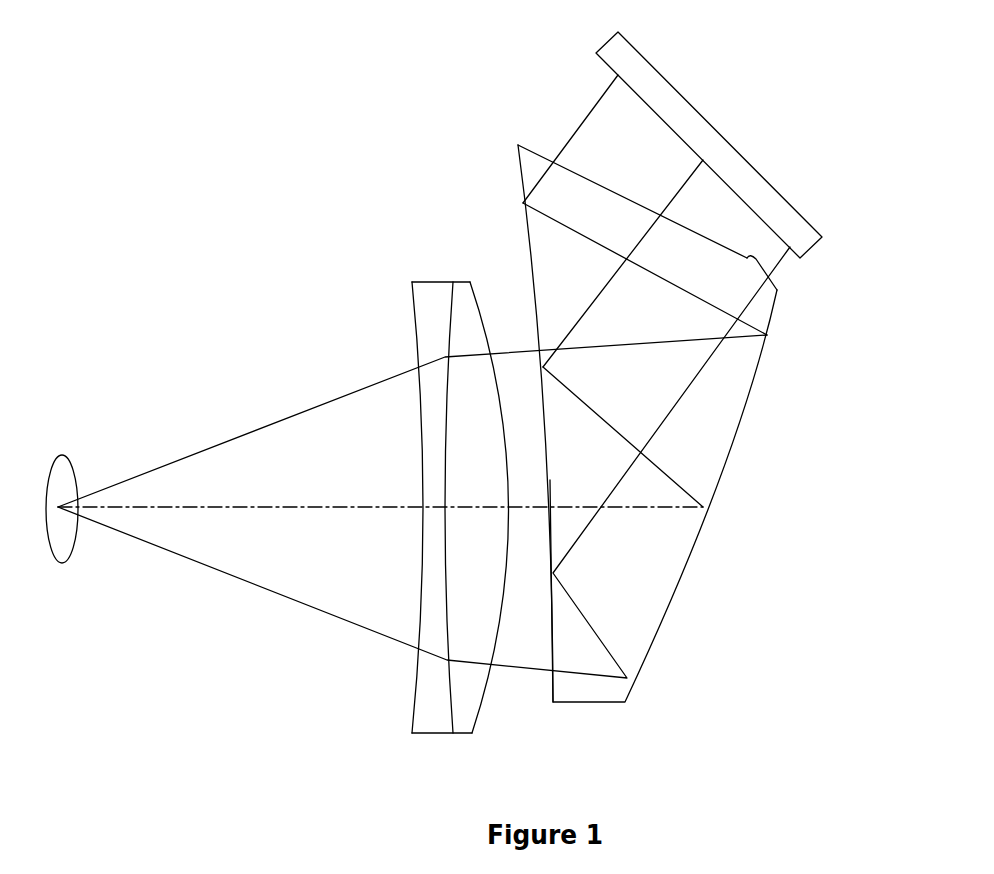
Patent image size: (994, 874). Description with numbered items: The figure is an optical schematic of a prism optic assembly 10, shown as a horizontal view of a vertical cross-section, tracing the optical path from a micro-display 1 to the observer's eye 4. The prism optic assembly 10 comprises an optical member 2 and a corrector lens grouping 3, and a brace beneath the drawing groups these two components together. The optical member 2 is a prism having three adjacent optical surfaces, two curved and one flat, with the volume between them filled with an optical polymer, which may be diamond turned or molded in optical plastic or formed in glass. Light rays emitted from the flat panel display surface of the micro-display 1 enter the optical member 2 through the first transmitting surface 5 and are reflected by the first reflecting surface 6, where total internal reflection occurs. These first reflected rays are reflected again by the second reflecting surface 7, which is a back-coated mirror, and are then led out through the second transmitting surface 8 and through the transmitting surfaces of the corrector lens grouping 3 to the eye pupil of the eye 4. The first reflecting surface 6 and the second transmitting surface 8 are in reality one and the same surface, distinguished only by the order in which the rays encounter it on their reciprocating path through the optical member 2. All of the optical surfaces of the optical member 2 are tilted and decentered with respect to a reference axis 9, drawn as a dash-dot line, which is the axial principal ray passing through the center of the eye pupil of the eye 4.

The micro-display 1 is at (758, 193).
The optical member 2 is at (638, 593).
The corrector lens grouping 3 is at (445, 334).
The eye 4 is at (67, 465).
The first transmitting surface 5 is at (750, 263).
The first reflecting surface 6 is at (518, 160).
The second reflecting surface 7 is at (717, 493).
The second transmitting surface 8 is at (553, 606).
The reference axis 9 is at (260, 508).
The prism optic assembly 10 is at (402, 735).